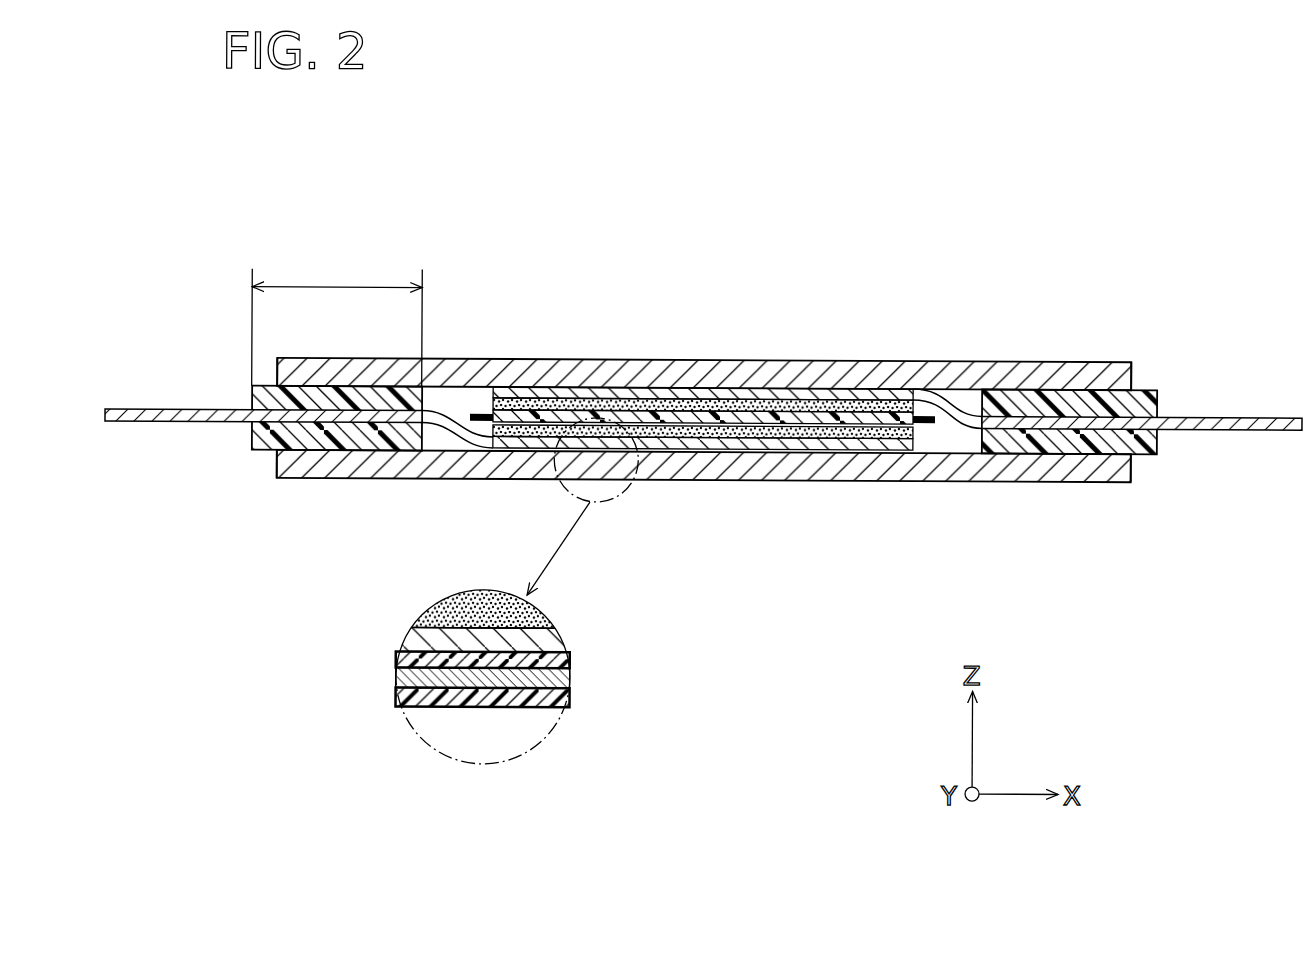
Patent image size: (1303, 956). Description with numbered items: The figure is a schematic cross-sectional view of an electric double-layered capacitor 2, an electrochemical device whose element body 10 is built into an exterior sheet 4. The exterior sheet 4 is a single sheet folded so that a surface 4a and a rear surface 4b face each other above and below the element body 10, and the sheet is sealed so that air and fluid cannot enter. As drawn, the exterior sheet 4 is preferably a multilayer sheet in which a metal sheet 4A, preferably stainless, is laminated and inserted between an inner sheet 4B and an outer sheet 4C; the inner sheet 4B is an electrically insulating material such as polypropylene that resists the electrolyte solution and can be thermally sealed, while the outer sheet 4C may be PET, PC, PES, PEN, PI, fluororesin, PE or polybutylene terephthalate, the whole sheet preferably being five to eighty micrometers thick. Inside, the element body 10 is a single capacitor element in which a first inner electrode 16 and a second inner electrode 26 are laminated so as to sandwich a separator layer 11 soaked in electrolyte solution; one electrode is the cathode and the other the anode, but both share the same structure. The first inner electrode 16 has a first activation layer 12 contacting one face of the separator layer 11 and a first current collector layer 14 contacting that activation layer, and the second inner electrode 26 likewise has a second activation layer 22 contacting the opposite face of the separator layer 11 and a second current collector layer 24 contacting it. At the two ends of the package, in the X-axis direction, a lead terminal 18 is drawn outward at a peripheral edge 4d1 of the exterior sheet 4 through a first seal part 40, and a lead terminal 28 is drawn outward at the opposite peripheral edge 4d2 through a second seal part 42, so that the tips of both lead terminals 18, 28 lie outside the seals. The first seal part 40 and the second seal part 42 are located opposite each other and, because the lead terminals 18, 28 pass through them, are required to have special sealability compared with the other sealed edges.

The electric double-layered capacitor 2 is at (812, 348).
The exterior sheet 4 is at (707, 359).
The surface 4a is at (928, 361).
The rear surface 4b is at (905, 479).
The peripheral edge 4d1 is at (275, 480).
The peripheral edge 4d2 is at (1132, 480).
The metal sheet 4A is at (398, 682).
The inner sheet 4B is at (398, 660).
The outer sheet 4C is at (436, 728).
The element body 10 is at (934, 436).
The separator layer 11 is at (488, 413).
The first activation layer 12 is at (742, 432).
The first current collector layer 14 is at (800, 443).
The first inner electrode 16 is at (654, 539).
The lead terminal 18 is at (177, 427).
The second activation layer 22 is at (552, 396).
The second current collector layer 24 is at (600, 397).
The second inner electrode 26 is at (703, 324).
The lead terminal 28 is at (1242, 428).
The first seal part 40 is at (262, 400).
The second seal part 42 is at (1157, 396).